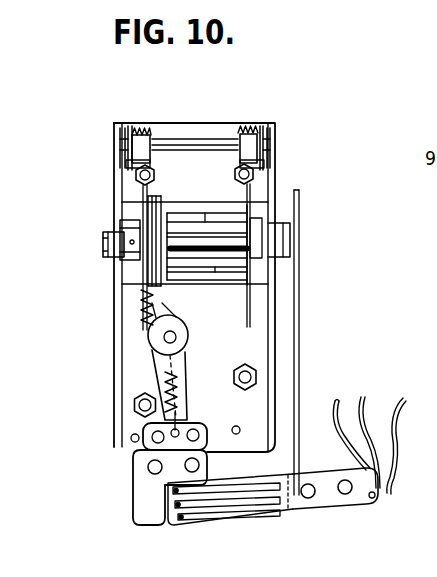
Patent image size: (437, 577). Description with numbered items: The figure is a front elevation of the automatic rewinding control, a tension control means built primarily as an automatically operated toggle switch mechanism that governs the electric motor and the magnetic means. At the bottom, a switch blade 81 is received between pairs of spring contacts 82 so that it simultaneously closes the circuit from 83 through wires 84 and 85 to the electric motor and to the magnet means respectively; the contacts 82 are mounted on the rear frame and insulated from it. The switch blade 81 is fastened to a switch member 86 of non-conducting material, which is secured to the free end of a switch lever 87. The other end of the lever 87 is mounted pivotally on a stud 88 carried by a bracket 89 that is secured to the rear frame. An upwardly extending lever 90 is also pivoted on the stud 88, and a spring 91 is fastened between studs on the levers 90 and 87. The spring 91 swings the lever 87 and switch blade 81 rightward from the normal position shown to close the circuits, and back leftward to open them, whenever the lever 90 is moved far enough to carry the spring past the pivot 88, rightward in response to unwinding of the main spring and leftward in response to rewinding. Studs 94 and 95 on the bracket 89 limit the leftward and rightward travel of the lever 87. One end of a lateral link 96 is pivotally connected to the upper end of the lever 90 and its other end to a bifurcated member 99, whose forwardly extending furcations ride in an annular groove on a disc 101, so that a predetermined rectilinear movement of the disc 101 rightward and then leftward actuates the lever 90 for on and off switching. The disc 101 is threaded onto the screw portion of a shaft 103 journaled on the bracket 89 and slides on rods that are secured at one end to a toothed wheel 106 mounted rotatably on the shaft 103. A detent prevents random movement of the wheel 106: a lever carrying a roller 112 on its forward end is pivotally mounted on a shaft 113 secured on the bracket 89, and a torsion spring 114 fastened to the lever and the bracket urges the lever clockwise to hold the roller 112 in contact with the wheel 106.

The switch blade 81 is at (137, 495).
The spring contacts 82 is at (168, 514).
The circuit source 83 is at (336, 401).
The wire 84 is at (364, 396).
The wire 85 is at (406, 404).
The switch member 86 is at (146, 448).
The switch lever 87 is at (182, 363).
The stud 88 is at (186, 337).
The bracket 89 is at (252, 417).
The upwardly extending lever 90 is at (163, 298).
The spring 91 is at (178, 381).
The stud 94 is at (131, 437).
The stud 95 is at (236, 434).
The lateral link 96 is at (128, 217).
The bifurcated member 99 is at (158, 198).
The disc 101 is at (158, 212).
The shaft 103 is at (103, 244).
The toothed wheel 106 is at (248, 192).
The roller 112 is at (261, 171).
The shaft 113 is at (120, 140).
The torsion spring 114 is at (254, 125).